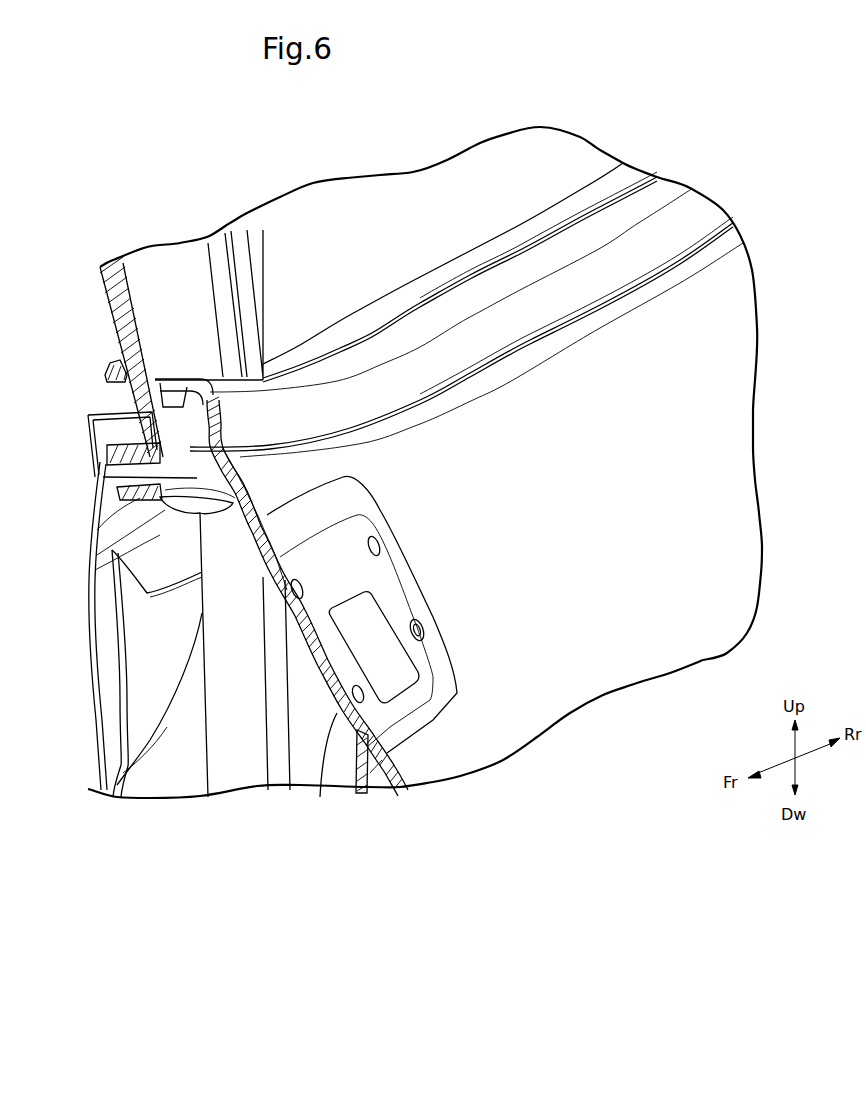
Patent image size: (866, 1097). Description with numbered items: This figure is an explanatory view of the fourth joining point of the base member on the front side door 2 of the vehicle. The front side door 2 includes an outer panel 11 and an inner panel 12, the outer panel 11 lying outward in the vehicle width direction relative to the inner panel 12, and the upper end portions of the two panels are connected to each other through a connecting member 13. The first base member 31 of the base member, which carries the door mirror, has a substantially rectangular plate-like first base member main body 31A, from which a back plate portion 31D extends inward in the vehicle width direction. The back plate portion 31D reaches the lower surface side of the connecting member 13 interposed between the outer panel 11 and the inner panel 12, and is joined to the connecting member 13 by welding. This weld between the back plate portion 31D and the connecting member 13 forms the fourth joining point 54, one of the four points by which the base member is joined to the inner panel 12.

The front side door 2 is at (327, 223).
The outer panel 11 is at (620, 663).
The inner panel 12 is at (92, 750).
The connecting member 13 is at (103, 482).
The first base member 31 is at (317, 679).
The first base member main body 31A is at (322, 770).
The back plate portion 31D is at (145, 495).
The fourth joining point 54 is at (165, 497).